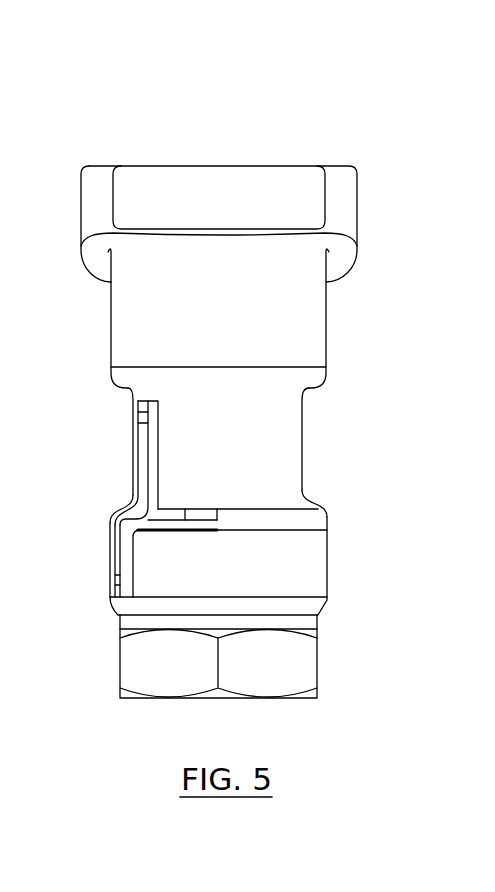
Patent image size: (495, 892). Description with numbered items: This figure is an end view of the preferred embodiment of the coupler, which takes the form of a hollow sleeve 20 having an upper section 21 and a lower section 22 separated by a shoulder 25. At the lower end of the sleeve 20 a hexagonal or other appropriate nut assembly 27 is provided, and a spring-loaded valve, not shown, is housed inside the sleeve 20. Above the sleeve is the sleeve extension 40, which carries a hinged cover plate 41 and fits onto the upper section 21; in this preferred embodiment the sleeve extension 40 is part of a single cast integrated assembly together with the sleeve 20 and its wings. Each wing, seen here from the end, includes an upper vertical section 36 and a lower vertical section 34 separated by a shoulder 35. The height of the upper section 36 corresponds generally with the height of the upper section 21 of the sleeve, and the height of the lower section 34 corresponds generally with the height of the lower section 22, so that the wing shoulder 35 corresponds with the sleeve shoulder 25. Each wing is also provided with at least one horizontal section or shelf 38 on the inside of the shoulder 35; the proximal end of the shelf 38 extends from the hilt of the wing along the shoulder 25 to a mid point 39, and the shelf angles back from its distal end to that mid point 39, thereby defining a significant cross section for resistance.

The hollow sleeve 20 is at (326, 440).
The upper section 21 is at (270, 415).
The lower section 22 is at (312, 557).
The shoulder 25 is at (307, 522).
The nut assembly 27 is at (263, 678).
The lower vertical section 34 is at (118, 557).
The shoulder 35 is at (120, 518).
The upper vertical section 36 is at (142, 452).
The shelf 38 is at (195, 509).
The mid point 39 is at (218, 531).
The sleeve extension 40 is at (305, 323).
The hinged cover plate 41 is at (263, 183).